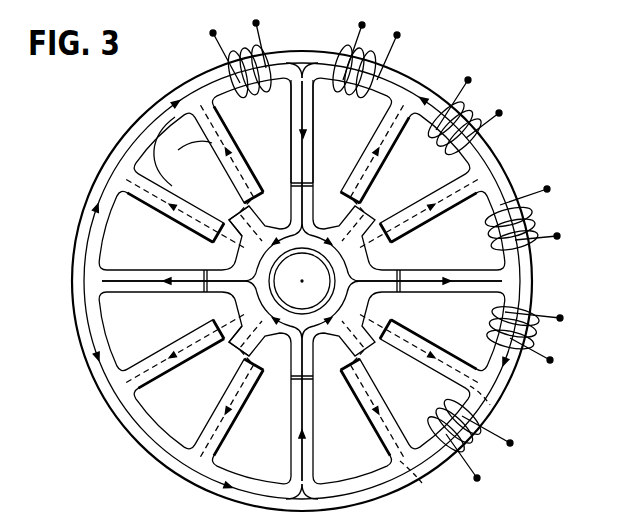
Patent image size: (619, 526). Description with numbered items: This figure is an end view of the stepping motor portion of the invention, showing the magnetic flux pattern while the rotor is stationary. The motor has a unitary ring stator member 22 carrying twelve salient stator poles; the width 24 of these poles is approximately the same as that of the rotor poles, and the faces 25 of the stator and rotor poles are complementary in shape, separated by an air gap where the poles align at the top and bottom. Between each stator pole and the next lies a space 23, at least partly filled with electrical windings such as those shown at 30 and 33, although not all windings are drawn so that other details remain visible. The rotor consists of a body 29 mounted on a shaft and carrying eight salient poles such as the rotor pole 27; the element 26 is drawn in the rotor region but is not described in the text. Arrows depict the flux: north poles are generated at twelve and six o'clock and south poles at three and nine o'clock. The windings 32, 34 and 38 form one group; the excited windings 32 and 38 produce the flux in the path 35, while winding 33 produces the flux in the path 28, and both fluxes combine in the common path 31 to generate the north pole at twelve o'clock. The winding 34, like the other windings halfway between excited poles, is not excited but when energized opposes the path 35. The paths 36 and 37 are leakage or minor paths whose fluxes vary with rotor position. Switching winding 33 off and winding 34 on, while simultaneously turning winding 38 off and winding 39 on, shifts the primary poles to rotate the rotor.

The unitary ring stator member 22 is at (187, 100).
The space 23 is at (168, 118).
The width of the stator poles 24 is at (147, 200).
The faces of the stator poles 25 is at (213, 340).
The hub pole piece 26 is at (247, 340).
The rotor pole 27 is at (240, 233).
The flux path 28 is at (188, 90).
The rotor body 29 is at (267, 345).
The electrical winding 30 is at (560, 316).
The common flux path 31 is at (315, 108).
The winding 32 is at (360, 26).
The winding 33 is at (258, 24).
The winding 34 is at (466, 80).
The flux path 35 is at (313, 58).
The leakage flux path 36 is at (483, 391).
The leakage flux path 37 is at (420, 480).
The winding 38 is at (545, 189).
The winding 39 is at (490, 423).